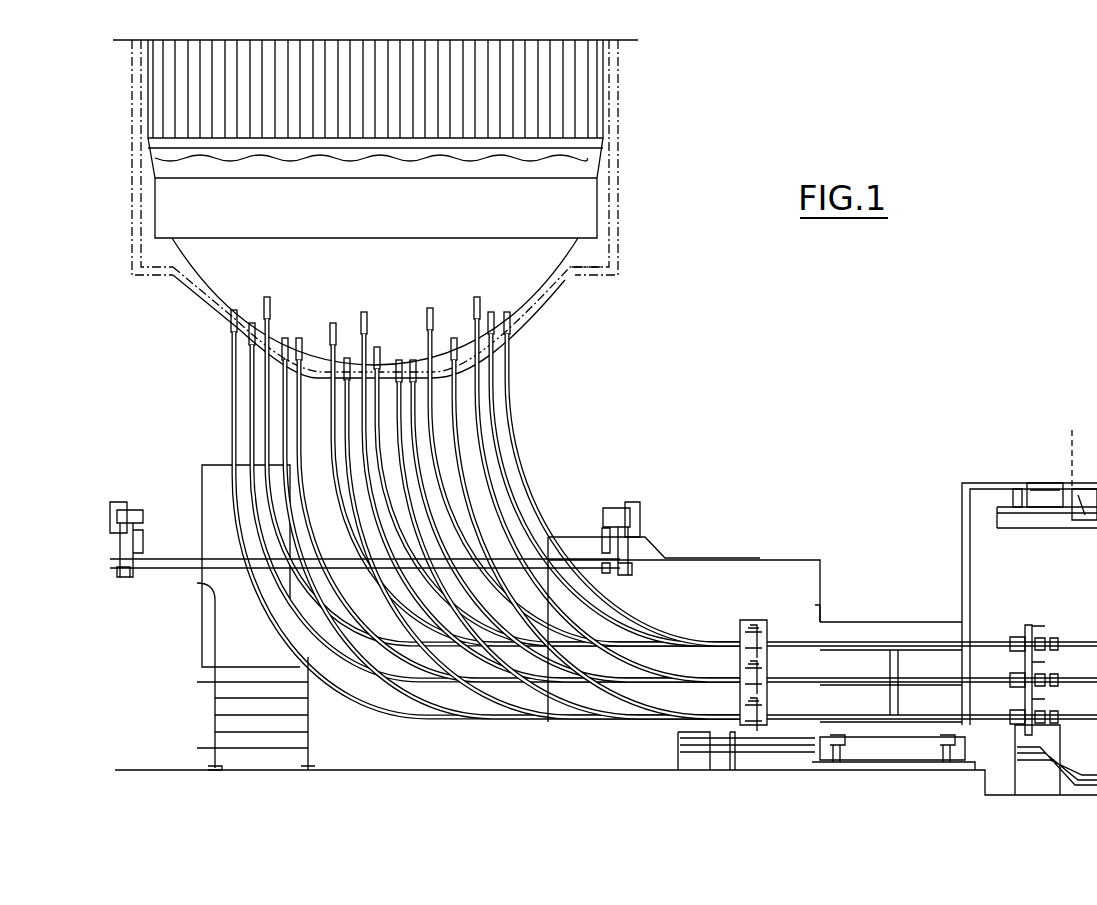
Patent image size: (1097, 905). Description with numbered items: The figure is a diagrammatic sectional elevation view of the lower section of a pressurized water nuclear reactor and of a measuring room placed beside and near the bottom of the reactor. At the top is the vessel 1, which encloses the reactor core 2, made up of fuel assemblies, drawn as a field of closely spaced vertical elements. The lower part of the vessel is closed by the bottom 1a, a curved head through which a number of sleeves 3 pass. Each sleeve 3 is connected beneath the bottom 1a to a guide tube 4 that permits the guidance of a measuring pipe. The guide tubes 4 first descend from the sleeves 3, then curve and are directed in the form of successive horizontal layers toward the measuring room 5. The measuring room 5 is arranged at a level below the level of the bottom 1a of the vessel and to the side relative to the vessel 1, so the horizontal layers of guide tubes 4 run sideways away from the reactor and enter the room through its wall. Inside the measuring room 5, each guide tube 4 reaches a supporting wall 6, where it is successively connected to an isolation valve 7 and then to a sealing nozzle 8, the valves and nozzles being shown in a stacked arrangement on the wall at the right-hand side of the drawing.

The vessel 1 is at (605, 198).
The bottom of the vessel 1a is at (518, 292).
The reactor core 2 is at (590, 92).
The sleeves 3 is at (510, 328).
The guide tubes 4 is at (508, 412).
The measuring room 5 is at (982, 562).
The supporting wall 6 is at (1030, 622).
The isolation valve 7 is at (1012, 632).
The sealing nozzle 8 is at (1058, 640).